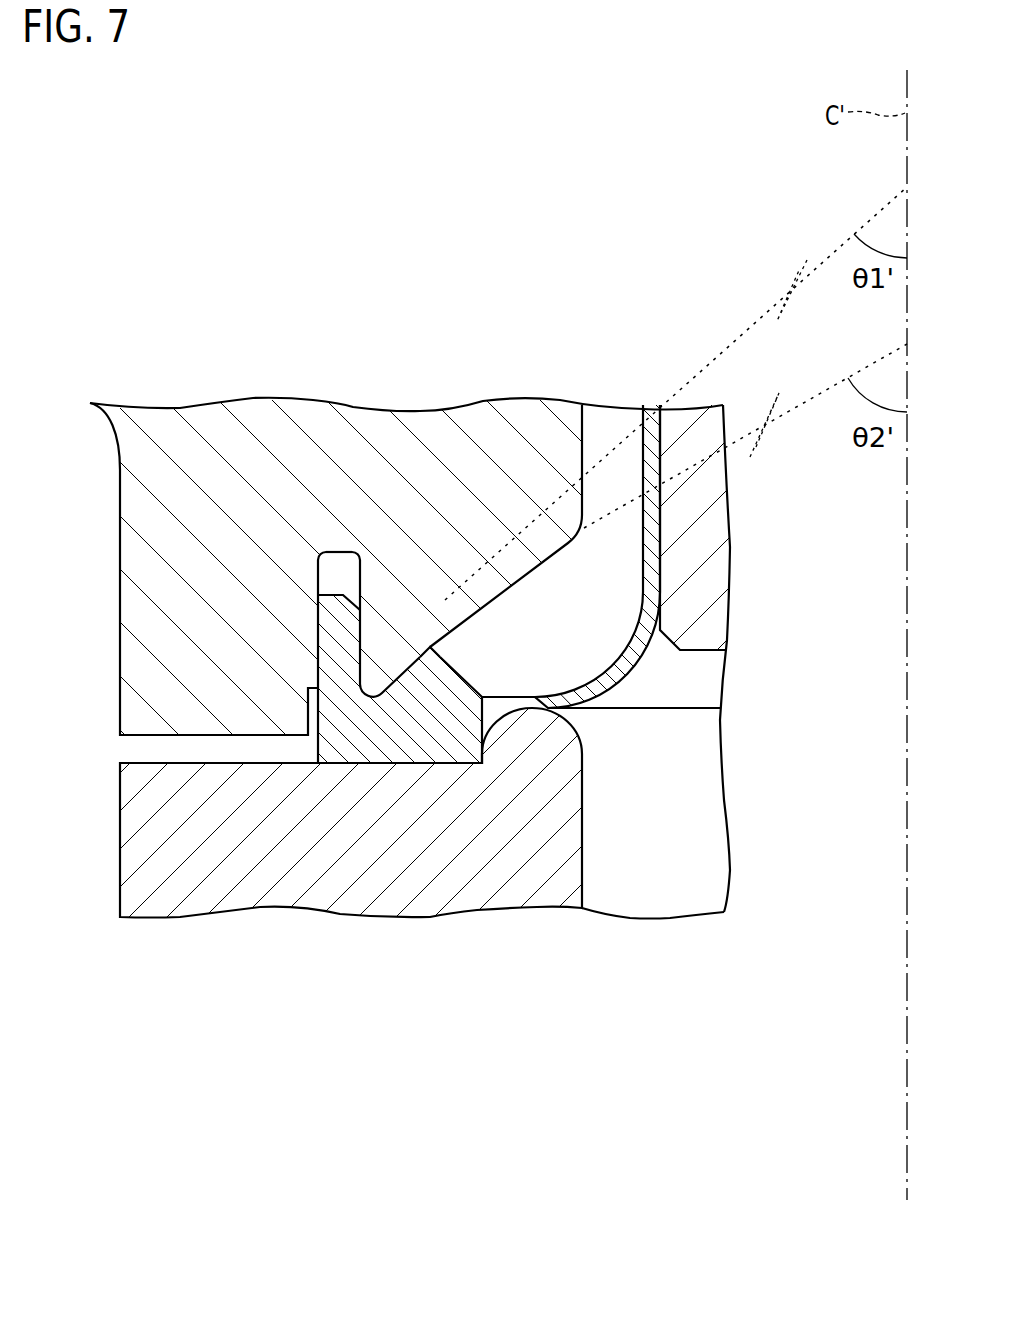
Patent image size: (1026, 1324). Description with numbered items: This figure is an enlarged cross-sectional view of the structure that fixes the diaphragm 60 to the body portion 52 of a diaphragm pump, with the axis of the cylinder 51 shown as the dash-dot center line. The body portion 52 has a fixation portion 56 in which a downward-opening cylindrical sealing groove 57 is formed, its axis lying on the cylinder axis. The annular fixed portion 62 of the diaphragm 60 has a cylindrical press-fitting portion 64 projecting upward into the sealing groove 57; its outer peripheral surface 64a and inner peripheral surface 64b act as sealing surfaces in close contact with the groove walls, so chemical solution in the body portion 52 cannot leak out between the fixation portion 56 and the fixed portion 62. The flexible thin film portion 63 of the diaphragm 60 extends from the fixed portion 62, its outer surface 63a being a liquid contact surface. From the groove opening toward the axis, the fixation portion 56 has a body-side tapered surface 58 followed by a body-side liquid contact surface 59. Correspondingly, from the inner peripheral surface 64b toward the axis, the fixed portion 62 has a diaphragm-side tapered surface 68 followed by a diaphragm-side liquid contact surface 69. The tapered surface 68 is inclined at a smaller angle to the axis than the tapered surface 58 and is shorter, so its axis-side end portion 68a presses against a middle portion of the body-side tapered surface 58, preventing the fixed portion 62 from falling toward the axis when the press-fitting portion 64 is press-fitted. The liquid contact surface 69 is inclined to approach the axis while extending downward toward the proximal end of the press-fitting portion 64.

The cylinder 51 is at (106, 832).
The body portion 52 is at (106, 581).
The fixation portion 56 is at (140, 510).
The sealing groove 57 is at (342, 536).
The body-side tapered surface 58 is at (515, 583).
The body-side liquid contact surface 59 is at (586, 418).
The diaphragm 60 is at (655, 657).
The fixed portion 62 is at (390, 750).
The thin film portion 63 is at (653, 530).
The outer surface 63a is at (643, 560).
The press-fitting portion 64 is at (332, 657).
The outer peripheral surface 64a is at (318, 617).
The inner peripheral surface 64b is at (361, 634).
The diaphragm-side tapered surface 68 is at (388, 680).
The end portion 68a is at (430, 647).
The diaphragm-side liquid contact surface 69 is at (452, 668).